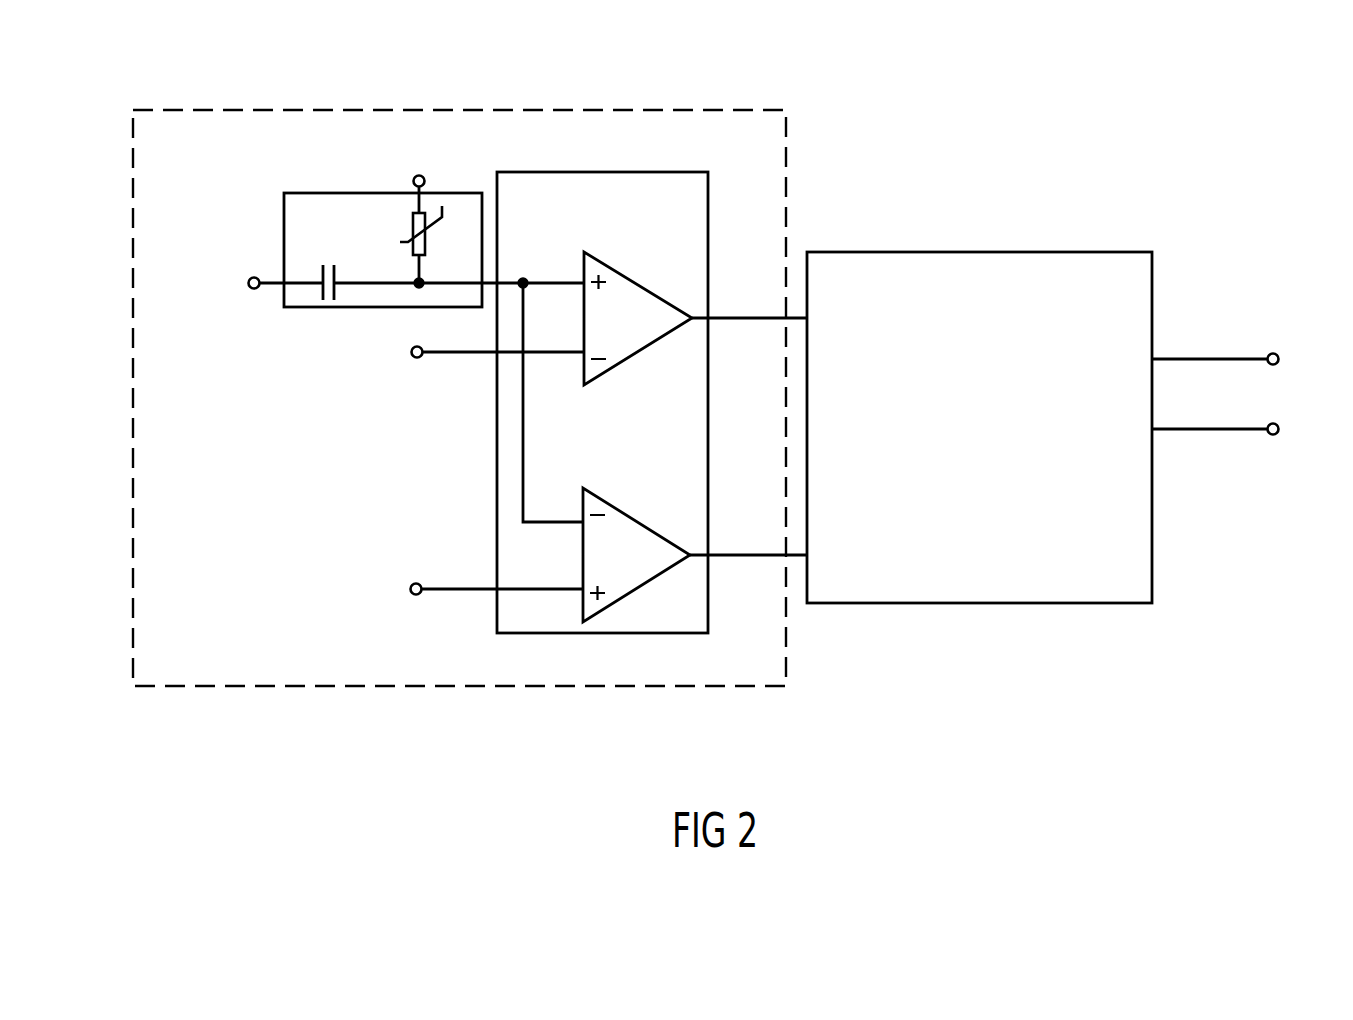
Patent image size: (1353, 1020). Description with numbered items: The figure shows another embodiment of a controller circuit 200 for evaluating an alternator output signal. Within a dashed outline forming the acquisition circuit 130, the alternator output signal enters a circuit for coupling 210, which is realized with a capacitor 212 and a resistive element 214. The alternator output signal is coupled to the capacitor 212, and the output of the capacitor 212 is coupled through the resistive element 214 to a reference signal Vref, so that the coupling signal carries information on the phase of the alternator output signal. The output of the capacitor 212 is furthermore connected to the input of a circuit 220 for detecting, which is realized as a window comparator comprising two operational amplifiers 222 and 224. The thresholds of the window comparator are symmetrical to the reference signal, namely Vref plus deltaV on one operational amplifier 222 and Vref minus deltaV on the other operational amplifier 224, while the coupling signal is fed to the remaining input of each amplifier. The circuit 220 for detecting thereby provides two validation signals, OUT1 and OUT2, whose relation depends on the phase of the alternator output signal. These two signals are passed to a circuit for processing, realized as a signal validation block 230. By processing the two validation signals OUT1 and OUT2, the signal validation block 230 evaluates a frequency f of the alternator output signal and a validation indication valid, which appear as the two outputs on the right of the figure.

The controller circuit 200 is at (154, 722).
The acquisition circuit 130 is at (786, 113).
The circuit for coupling 210 is at (284, 308).
The capacitor 212 is at (340, 297).
The resistive element 214 is at (408, 240).
The circuit for detecting 220 is at (708, 633).
The operational amplifier 222 is at (600, 261).
The operational amplifier 224 is at (600, 498).
The signal validation block 230 is at (1152, 603).